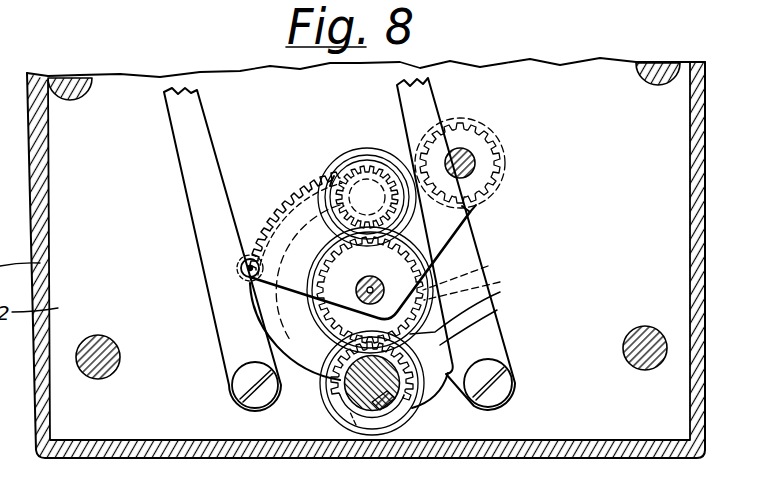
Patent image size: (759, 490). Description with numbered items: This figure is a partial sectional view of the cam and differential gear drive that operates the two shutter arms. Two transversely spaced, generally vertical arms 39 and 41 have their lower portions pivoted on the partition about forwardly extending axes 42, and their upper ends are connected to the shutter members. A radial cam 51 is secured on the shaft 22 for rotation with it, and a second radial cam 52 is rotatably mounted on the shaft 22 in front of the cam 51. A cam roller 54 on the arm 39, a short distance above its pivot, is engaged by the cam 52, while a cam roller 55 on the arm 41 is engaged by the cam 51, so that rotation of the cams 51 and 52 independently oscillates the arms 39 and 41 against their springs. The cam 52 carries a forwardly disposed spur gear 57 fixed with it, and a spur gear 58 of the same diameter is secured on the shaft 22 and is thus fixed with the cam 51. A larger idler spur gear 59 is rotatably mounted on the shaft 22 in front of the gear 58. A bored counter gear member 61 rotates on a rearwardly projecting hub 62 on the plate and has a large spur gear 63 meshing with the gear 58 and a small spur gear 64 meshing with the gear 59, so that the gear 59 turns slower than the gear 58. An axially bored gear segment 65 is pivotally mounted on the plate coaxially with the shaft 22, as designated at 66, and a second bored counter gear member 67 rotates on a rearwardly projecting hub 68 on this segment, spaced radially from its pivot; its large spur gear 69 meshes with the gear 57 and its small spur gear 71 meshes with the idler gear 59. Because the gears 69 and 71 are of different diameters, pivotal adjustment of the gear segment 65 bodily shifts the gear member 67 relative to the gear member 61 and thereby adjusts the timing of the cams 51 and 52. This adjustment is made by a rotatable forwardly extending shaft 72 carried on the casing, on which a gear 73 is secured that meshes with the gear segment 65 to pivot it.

The shaft 22 is at (364, 301).
The vertical arm 39 is at (192, 183).
The vertical arm 41 is at (436, 110).
The pivotal axes 42 is at (232, 388).
The radial cam 51 is at (496, 311).
The second radial cam 52 is at (273, 308).
The cam roller 54 is at (247, 263).
The cam roller 55 is at (356, 425).
The spur gear 57 is at (478, 253).
The spur gear 58 is at (488, 267).
The idler spur gear 59 is at (493, 288).
The counter gear member 61 is at (347, 412).
The hub 62 is at (395, 405).
The large spur gear 63 is at (328, 408).
The small spur gear 64 is at (410, 411).
The gear segment 65 is at (282, 203).
The pivotal mounting 66 is at (372, 277).
The counter gear member 67 is at (367, 168).
The hub 68 is at (346, 163).
The large spur gear 69 is at (388, 158).
The small spur gear 71 is at (333, 167).
The shaft 72 is at (472, 150).
The gear 73 is at (474, 207).